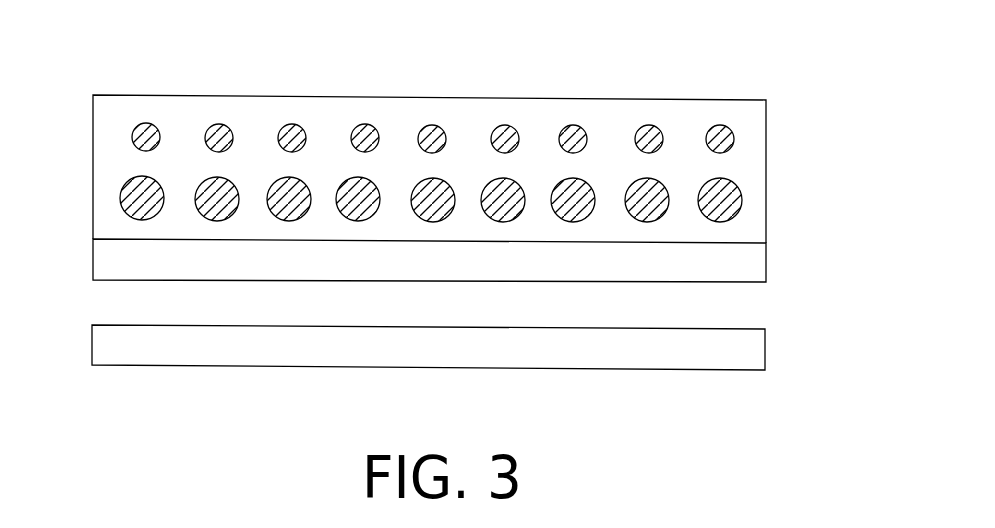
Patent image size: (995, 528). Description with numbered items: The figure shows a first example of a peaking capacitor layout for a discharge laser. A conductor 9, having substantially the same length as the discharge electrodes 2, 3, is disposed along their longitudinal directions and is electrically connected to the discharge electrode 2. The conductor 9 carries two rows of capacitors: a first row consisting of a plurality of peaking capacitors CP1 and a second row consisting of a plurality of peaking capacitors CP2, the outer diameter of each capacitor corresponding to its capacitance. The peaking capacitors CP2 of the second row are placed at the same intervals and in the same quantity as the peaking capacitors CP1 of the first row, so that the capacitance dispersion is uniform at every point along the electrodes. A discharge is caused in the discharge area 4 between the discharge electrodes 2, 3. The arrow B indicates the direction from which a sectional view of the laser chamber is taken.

The discharge electrode 2 is at (766, 253).
The discharge electrode 3 is at (765, 348).
The discharge area 4 is at (375, 304).
The conductor 9 is at (703, 107).
The peaking capacitor CP1 is at (134, 214).
The peaking capacitor CP2 is at (147, 123).
The arrow B is at (858, 175).